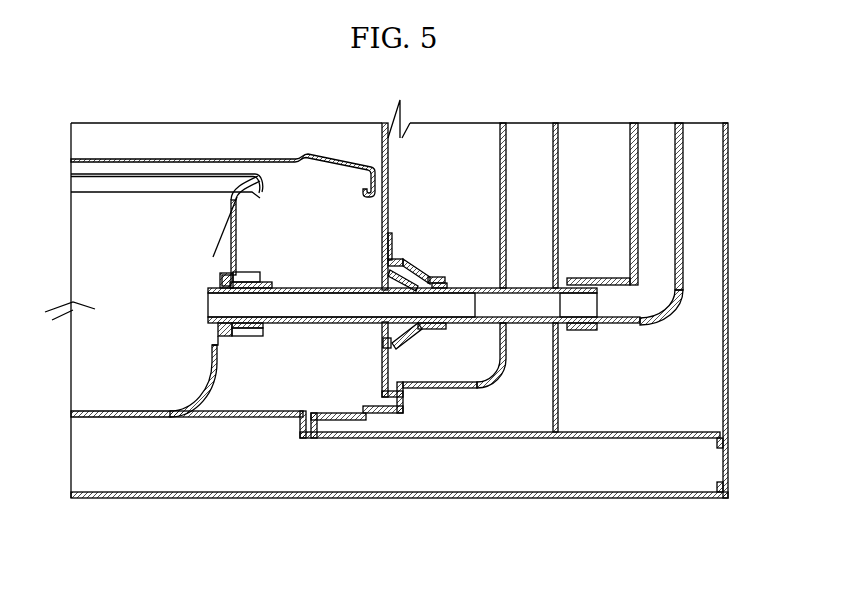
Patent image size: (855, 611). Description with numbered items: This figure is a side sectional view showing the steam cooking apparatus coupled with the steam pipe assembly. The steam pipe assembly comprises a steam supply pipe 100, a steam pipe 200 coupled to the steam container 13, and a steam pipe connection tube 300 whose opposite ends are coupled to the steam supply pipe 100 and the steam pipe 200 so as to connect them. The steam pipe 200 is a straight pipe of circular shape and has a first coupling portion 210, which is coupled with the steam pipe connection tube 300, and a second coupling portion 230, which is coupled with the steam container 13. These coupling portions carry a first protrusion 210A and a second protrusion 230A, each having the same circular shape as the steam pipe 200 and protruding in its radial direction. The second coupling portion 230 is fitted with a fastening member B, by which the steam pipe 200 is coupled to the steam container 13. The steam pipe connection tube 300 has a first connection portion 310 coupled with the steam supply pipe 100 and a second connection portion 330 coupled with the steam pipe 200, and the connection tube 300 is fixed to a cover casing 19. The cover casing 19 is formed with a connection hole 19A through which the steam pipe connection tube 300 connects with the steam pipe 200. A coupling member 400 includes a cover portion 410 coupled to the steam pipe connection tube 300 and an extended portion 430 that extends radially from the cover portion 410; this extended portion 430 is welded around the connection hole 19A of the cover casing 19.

The steam container 13 is at (90, 370).
The cover casing 19 is at (361, 251).
The connection hole 19A is at (382, 270).
The steam supply pipe 100 is at (699, 190).
The steam pipe 200 is at (424, 376).
The first coupling portion 210 is at (341, 435).
The first protrusion 210A is at (397, 352).
The second coupling portion 230 is at (250, 330).
The second protrusion 230A is at (267, 337).
The steam pipe connection tube 300 is at (543, 277).
The first connection portion 310 is at (581, 331).
The second connection portion 330 is at (383, 283).
The coupling member 400 is at (440, 241).
The cover portion 410 is at (435, 267).
The extended portion 430 is at (392, 243).
The fastening member B is at (230, 265).